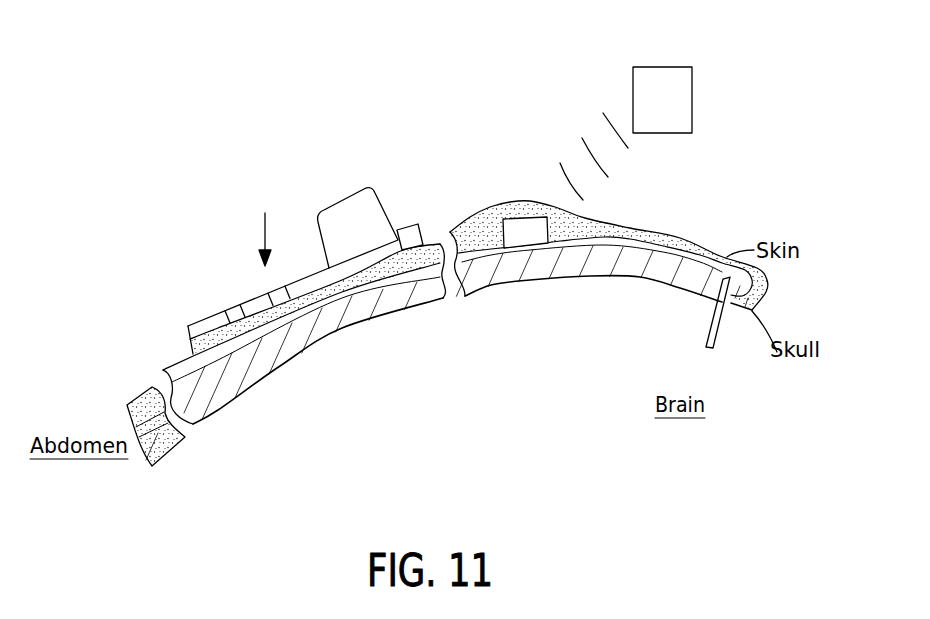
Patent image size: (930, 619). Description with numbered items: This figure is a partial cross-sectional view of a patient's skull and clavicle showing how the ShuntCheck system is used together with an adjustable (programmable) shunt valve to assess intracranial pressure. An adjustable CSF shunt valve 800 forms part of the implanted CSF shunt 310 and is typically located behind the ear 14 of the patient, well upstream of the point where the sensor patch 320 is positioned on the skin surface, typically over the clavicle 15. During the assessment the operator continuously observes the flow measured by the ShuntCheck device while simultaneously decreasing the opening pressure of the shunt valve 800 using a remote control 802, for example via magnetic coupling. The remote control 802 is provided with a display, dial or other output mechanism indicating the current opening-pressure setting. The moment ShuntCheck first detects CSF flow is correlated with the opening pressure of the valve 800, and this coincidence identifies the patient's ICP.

The clavicle 15 is at (188, 326).
The sensor patch 320 is at (266, 228).
The implanted CSF shunt 310 is at (313, 313).
The ear 14 is at (493, 205).
The adjustable CSF shunt valve 800 is at (514, 218).
The remote control 802 is at (652, 66).